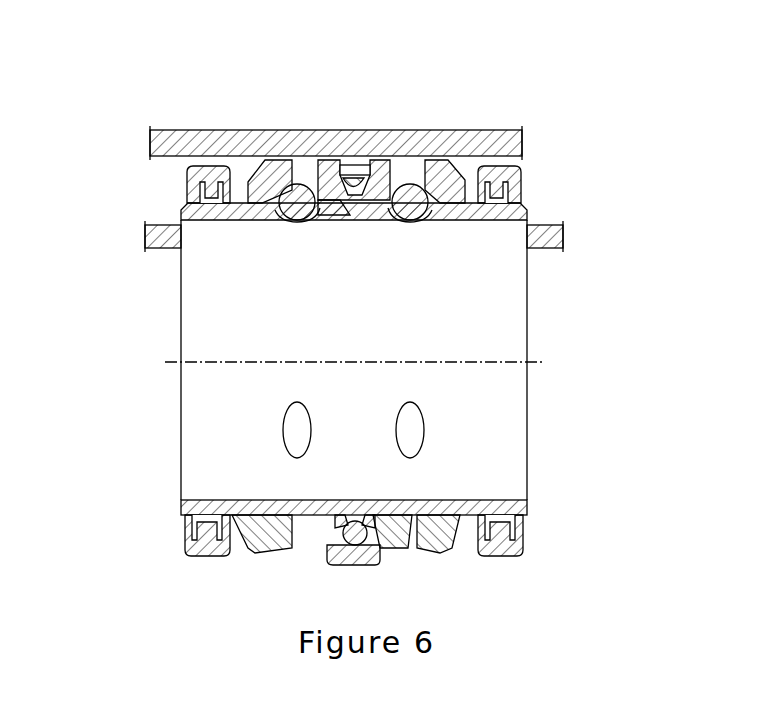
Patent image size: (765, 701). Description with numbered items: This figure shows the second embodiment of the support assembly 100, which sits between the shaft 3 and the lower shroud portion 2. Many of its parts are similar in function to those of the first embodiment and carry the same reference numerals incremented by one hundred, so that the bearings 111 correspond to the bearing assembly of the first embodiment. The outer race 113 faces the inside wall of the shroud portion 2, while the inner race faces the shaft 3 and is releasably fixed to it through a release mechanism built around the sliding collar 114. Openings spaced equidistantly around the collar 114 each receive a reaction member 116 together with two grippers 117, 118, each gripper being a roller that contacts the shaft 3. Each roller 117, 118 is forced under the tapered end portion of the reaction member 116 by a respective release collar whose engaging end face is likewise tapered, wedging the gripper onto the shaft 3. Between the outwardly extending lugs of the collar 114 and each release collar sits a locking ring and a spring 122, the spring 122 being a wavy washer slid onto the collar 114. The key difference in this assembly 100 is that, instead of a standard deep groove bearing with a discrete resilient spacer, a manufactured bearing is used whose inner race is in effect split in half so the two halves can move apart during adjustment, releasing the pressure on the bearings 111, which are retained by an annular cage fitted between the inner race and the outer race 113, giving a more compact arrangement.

The lower shroud portion 2 is at (206, 128).
The shaft 3 is at (560, 236).
The support assembly 100 is at (533, 152).
The bearings 111 is at (393, 128).
The outer race 113 is at (353, 128).
The sliding collar 114 is at (527, 210).
The reaction member 116 is at (327, 128).
The gripper 117 is at (258, 128).
The gripper 118 is at (466, 128).
The spring 122 is at (210, 192).